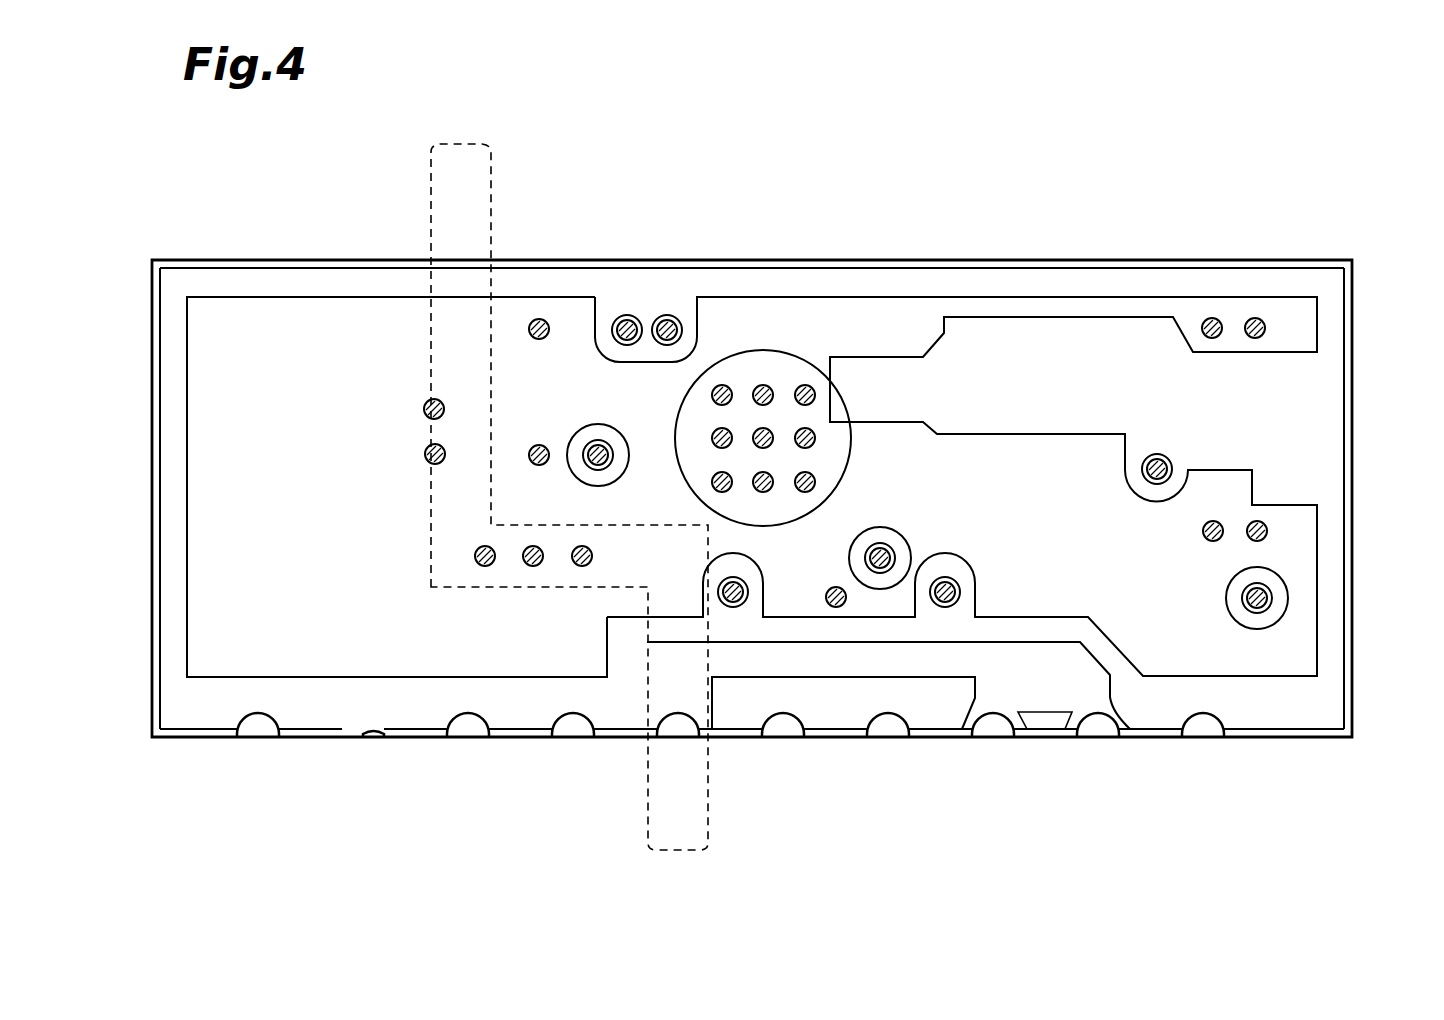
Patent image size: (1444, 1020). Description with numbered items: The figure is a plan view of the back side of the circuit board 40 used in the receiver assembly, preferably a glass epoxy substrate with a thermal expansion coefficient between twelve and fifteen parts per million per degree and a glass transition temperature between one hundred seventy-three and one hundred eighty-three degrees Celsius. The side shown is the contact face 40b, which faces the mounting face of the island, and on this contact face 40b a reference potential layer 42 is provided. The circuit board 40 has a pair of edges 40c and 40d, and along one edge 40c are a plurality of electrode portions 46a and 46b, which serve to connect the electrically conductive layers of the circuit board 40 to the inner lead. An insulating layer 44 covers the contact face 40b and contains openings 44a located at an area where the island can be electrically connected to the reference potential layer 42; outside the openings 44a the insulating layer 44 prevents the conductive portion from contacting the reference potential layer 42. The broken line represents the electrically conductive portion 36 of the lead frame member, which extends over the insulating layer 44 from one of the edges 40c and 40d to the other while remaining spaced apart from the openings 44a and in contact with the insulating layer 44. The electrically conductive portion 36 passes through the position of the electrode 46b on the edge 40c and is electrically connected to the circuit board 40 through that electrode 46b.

The electrically conductive portion 36 is at (493, 246).
The circuit board 40 is at (1353, 497).
The contact face 40b is at (195, 700).
The edge 40c is at (210, 738).
The edge 40d is at (183, 262).
The reference potential layer 42 is at (200, 588).
The insulating layer 44 is at (903, 287).
The openings 44a is at (763, 358).
The electrode portion 46a is at (255, 730).
The electrode portion 46b is at (678, 730).